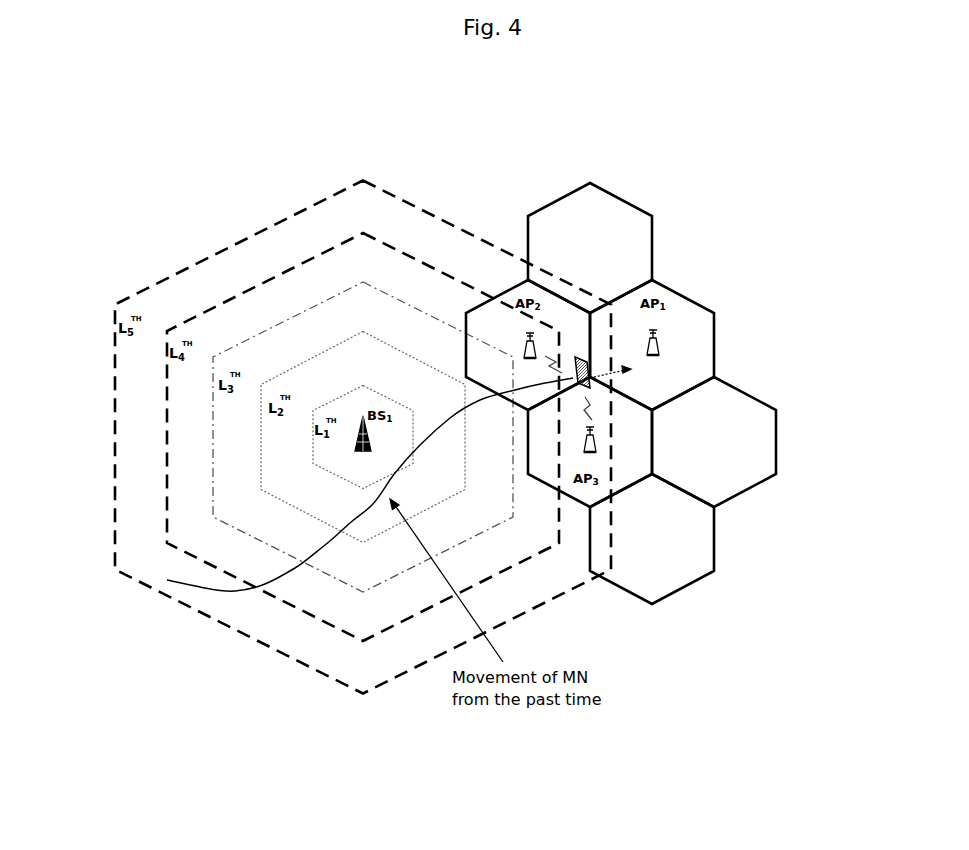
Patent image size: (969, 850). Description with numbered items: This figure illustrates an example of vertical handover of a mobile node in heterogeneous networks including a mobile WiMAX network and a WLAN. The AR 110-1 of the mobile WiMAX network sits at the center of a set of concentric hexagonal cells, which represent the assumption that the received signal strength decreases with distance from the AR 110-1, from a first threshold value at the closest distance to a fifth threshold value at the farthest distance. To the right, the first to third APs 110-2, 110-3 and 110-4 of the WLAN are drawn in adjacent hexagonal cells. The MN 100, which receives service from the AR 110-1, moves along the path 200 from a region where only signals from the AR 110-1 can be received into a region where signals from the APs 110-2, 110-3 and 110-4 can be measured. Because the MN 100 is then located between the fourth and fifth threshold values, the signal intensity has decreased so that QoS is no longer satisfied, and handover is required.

The AR of mobile WiMAX network 110-1 is at (347, 455).
The first AP of WLAN 110-2 is at (658, 353).
The second AP of WLAN 110-3 is at (533, 338).
The third AP of WLAN 110-4 is at (597, 452).
The MN 100 is at (592, 378).
The path of MN 200 is at (223, 590).